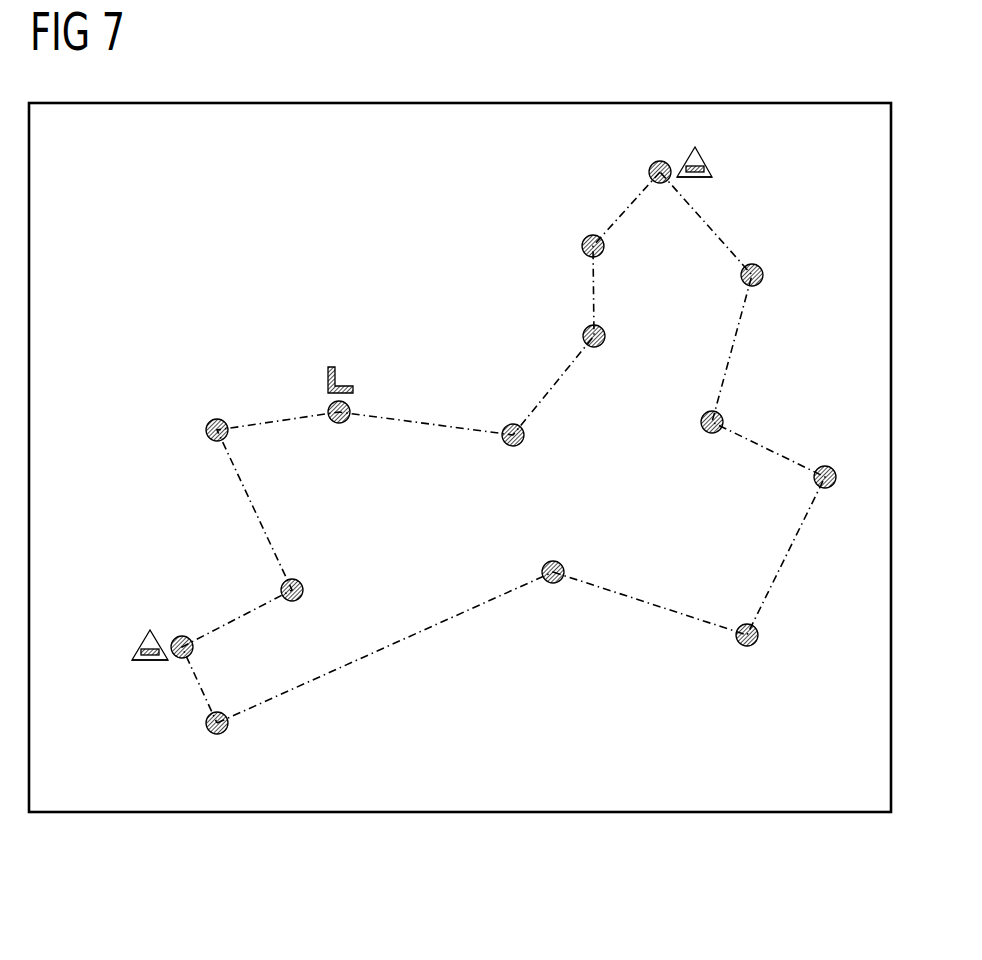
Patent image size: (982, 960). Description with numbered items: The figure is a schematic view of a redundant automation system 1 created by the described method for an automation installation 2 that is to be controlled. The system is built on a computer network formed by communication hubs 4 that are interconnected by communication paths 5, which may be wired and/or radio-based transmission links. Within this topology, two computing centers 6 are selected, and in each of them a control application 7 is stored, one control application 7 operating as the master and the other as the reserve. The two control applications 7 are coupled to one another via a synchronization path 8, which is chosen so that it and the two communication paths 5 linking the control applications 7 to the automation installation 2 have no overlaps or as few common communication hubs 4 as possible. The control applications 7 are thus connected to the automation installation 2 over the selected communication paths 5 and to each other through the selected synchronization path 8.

The redundant automation system 1 is at (504, 813).
The automation installation 2 is at (338, 365).
The communication hub 4 is at (217, 420).
The communication path 5 is at (560, 374).
The computing center 6 is at (707, 160).
The control application 7 is at (694, 182).
The synchronization path 8 is at (395, 643).